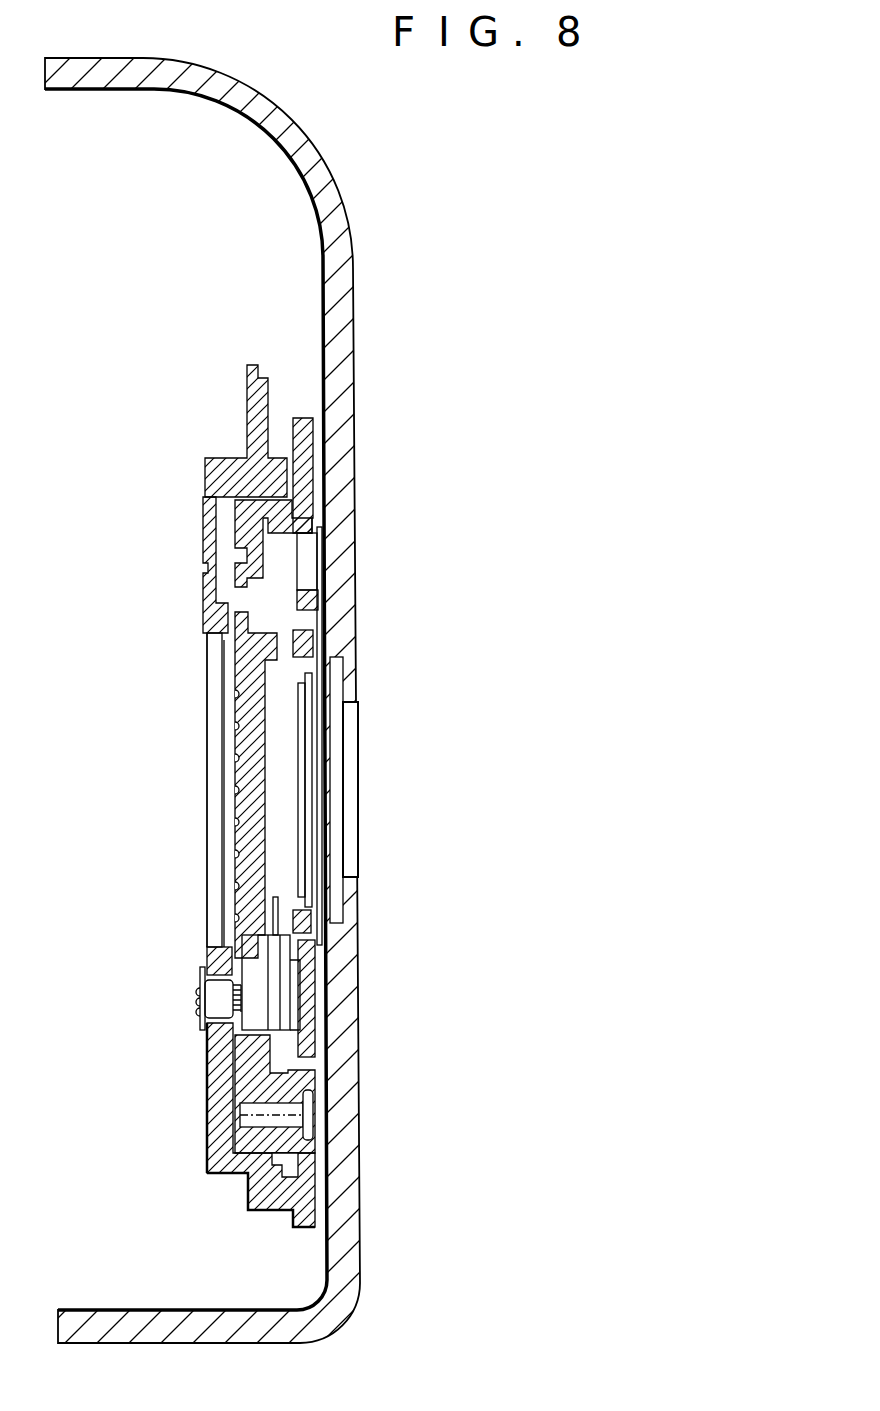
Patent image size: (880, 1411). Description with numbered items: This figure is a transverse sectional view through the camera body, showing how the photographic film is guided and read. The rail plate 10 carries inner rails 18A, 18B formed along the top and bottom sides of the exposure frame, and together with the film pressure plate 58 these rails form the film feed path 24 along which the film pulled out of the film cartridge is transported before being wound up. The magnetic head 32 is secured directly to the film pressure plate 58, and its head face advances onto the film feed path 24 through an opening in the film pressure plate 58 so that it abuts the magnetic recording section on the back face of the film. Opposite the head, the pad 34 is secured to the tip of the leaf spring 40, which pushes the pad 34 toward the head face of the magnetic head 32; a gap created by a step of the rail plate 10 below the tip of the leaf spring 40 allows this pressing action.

The rail plate 10 is at (208, 696).
The inner rail 18A is at (207, 622).
The inner rail 18B is at (207, 952).
The film feed path 24 is at (217, 785).
The magnetic head 32 is at (253, 1008).
The pad 34 is at (215, 1008).
The leaf spring 40 is at (200, 977).
The film pressure plate 58 is at (253, 840).